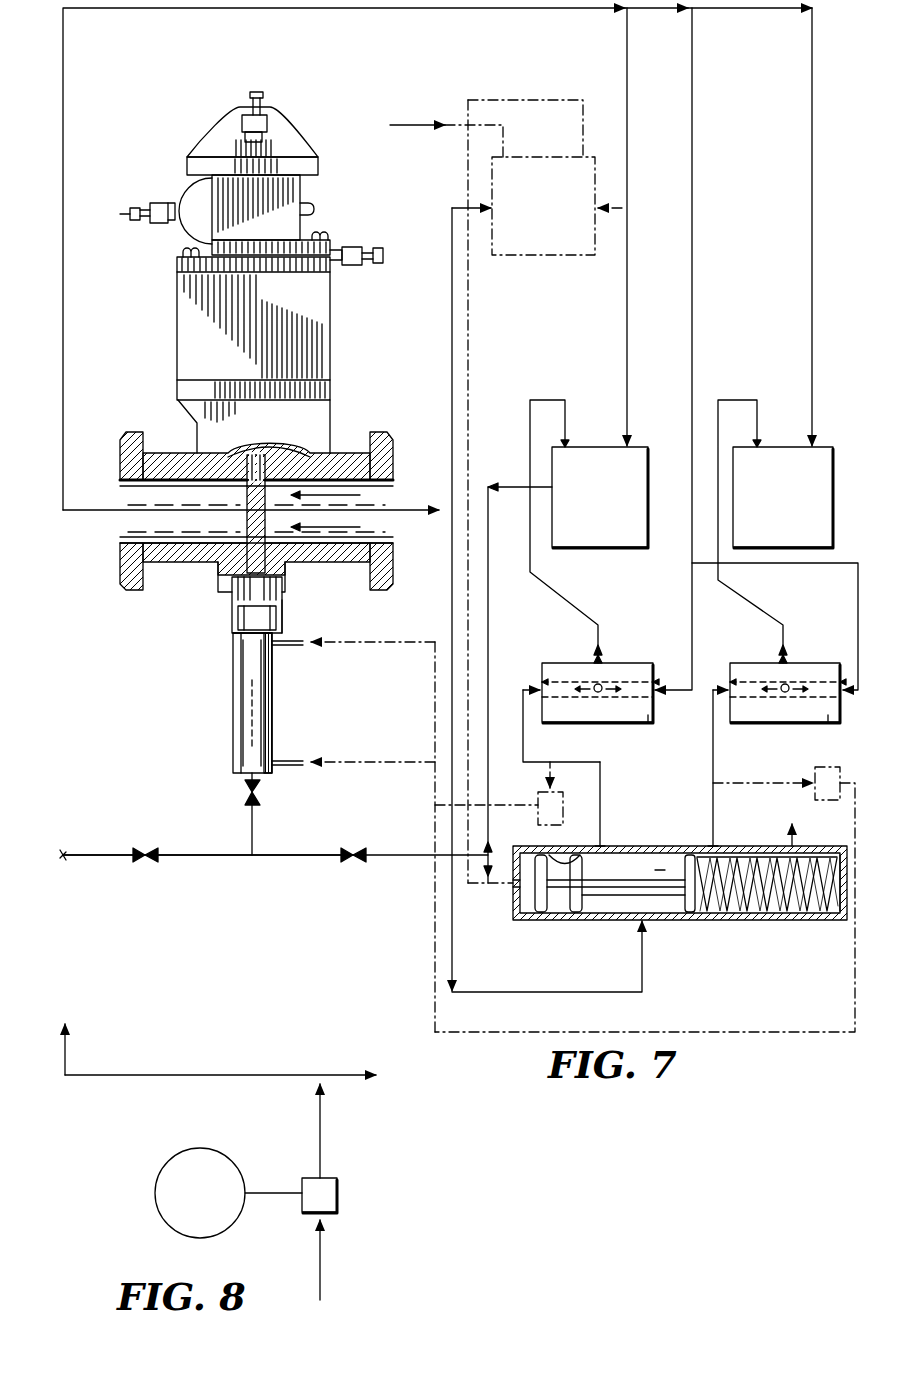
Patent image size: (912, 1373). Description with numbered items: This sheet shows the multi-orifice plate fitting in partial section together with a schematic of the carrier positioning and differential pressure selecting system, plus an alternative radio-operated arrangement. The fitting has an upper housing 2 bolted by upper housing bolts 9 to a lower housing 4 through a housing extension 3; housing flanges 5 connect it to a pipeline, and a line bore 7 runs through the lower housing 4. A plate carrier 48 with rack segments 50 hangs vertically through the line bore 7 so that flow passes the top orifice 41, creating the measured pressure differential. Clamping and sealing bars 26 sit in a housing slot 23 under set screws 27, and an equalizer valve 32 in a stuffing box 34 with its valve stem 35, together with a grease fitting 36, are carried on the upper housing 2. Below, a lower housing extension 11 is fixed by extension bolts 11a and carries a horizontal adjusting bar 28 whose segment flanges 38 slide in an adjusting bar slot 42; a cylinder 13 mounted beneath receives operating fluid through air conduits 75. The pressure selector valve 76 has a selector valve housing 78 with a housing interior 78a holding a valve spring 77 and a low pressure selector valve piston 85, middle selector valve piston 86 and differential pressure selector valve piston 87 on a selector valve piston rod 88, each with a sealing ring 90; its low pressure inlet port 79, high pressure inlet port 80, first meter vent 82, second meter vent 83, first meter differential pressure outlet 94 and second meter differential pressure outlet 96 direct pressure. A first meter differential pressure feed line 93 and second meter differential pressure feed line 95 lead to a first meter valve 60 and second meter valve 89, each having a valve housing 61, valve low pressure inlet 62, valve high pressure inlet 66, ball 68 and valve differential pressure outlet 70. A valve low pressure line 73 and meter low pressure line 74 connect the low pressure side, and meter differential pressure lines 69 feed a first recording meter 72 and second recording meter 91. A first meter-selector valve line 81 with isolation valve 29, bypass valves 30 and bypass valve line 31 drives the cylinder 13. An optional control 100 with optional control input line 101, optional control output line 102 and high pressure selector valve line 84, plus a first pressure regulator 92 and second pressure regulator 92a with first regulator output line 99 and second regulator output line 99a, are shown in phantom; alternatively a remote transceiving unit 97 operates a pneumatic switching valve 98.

In FIG. 7, the upper housing 2 is at (210, 180).
In FIG. 7, the housing extension 3 is at (177, 326).
In FIG. 7, the lower housing 4 is at (336, 432).
In FIG. 7, the housing flanges 5 is at (132, 430).
In FIG. 7, the line bore 7 is at (393, 478).
In FIG. 7, the upper housing bolts 9 is at (183, 250).
In FIG. 7, the lower housing extension 11 is at (227, 703).
In FIG. 7, the extension bolts 11a is at (222, 596).
In FIG. 7, the cylinder 13 is at (236, 672).
In FIG. 7, the housing slot 23 is at (247, 112).
In FIG. 7, the clamping and sealing bars 26 is at (268, 140).
In FIG. 7, the set screws 27 is at (264, 92).
In FIG. 7, the horizontal adjusting bar 28 is at (233, 638).
In FIG. 7, the isolation valve 29 is at (262, 800).
In FIG. 7, the bypass valves 30 is at (146, 848).
In FIG. 7, the bypass valve line 31 is at (78, 853).
In FIG. 8, the bypass valve line 31 is at (321, 1268).
In FIG. 7, the equalizer valve 32 is at (355, 245).
In FIG. 7, the stuffing box 34 is at (158, 203).
In FIG. 7, the valve stem 35 is at (135, 222).
In FIG. 7, the grease fitting 36 is at (128, 214).
In FIG. 7, the segment flanges 38 is at (282, 626).
In FIG. 7, the top orifice 41 is at (247, 510).
In FIG. 7, the adjusting bar slot 42 is at (240, 612).
In FIG. 7, the plate carrier 48 is at (275, 450).
In FIG. 7, the rack segments 50 is at (246, 490).
In FIG. 7, the first meter valve 60 is at (604, 722).
In FIG. 7, the valve housing 61 is at (648, 720).
In FIG. 7, the valve low pressure inlet 62 is at (653, 682).
In FIG. 7, the valve high pressure inlet 66 is at (542, 682).
In FIG. 7, the ball 68 is at (598, 692).
In FIG. 7, the meter differential pressure lines 69 is at (560, 588).
In FIG. 7, the valve differential pressure outlet 70 is at (602, 660).
In FIG. 7, the first recording meter 72 is at (600, 497).
In FIG. 7, the valve low pressure line 73 is at (690, 330).
In FIG. 7, the meter low pressure line 74 is at (66, 318).
In FIG. 7, the air conduits 75 is at (303, 758).
In FIG. 7, the pressure selector valve 76 is at (712, 920).
In FIG. 7, the valve spring 77 is at (778, 920).
In FIG. 7, the selector valve housing 78 is at (820, 920).
In FIG. 7, the housing interior 78a is at (660, 870).
In FIG. 7, the low pressure inlet port 79 is at (513, 890).
In FIG. 7, the high pressure inlet port 80 is at (632, 922).
In FIG. 7, the first meter-selector valve line 81 is at (264, 858).
In FIG. 8, the first meter-selector valve line 81 is at (68, 1060).
In FIG. 7, the first meter vent 82 is at (578, 856).
In FIG. 7, the second meter vent 83 is at (796, 845).
In FIG. 7, the high pressure selector valve line 84 is at (452, 208).
In FIG. 7, the low pressure selector valve piston 85 is at (540, 913).
In FIG. 7, the middle selector valve piston 86 is at (575, 913).
In FIG. 7, the differential pressure selector valve piston 87 is at (690, 913).
In FIG. 7, the selector valve piston rod 88 is at (600, 887).
In FIG. 7, the second meter valve 89 is at (782, 722).
In FIG. 7, the sealing ring 90 is at (598, 913).
In FIG. 7, the second recording meter 91 is at (783, 497).
In FIG. 7, the first pressure regulator 92 is at (563, 810).
In FIG. 7, the second pressure regulator 92a is at (838, 768).
In FIG. 7, the first meter differential pressure feed line 93 is at (600, 790).
In FIG. 7, the first meter differential pressure outlet 94 is at (600, 846).
In FIG. 7, the second meter differential pressure feed line 95 is at (713, 775).
In FIG. 7, the second meter differential pressure outlet 96 is at (713, 840).
In FIG. 8, the remote transceiving unit 97 is at (204, 1148).
In FIG. 8, the pneumatic switching valve 98 is at (340, 1178).
In FIG. 7, the first regulator output line 99 is at (435, 650).
In FIG. 7, the second regulator output line 99a is at (858, 820).
In FIG. 7, the optional control 100 is at (532, 255).
In FIG. 7, the optional control input line 101 is at (436, 118).
In FIG. 7, the optional control output line 102 is at (535, 100).